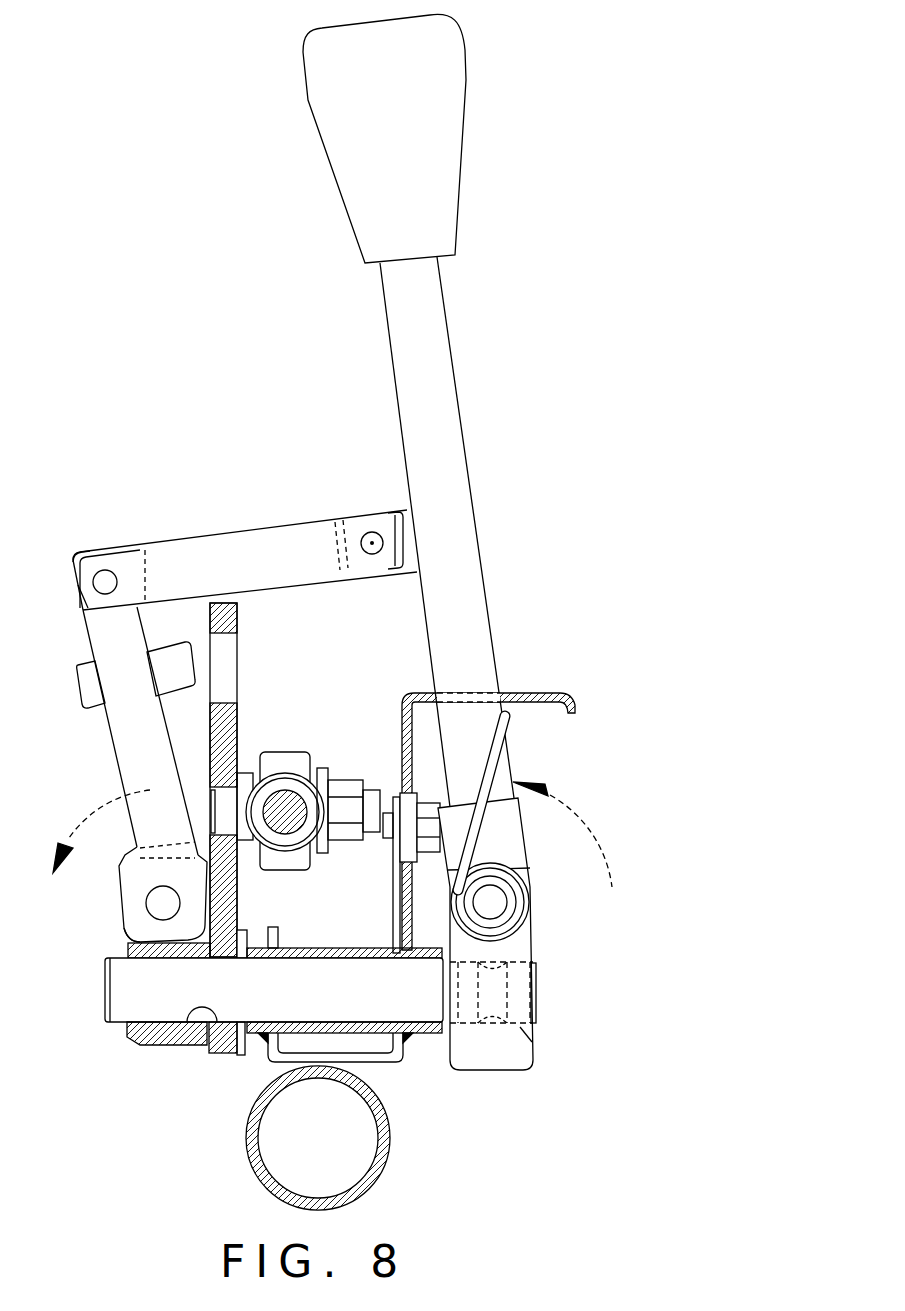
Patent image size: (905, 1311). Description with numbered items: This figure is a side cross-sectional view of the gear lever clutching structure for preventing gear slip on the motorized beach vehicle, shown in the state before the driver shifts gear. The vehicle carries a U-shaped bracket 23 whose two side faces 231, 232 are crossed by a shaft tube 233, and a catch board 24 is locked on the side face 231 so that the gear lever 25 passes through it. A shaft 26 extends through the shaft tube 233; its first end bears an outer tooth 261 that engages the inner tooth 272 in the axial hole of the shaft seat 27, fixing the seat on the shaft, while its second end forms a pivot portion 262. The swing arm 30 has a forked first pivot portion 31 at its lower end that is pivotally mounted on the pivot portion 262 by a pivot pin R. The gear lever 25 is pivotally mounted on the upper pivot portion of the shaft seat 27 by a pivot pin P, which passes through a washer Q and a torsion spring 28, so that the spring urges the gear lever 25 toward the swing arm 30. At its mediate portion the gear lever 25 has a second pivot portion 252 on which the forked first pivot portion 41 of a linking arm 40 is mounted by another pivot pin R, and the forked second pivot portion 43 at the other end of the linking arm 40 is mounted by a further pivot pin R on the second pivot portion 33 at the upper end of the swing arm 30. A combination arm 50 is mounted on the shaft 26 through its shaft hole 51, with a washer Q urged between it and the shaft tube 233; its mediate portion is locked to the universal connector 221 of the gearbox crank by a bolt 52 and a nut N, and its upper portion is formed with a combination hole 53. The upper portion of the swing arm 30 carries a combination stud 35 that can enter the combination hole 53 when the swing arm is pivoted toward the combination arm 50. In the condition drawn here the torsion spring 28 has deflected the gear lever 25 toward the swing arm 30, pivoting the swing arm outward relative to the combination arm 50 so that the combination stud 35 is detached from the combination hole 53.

The U-shaped bracket 23 is at (375, 1065).
The catch board 24 is at (543, 695).
The gear lever 25 is at (440, 373).
The shaft 26 is at (393, 1000).
The shaft seat 27 is at (488, 1060).
The torsion spring 28 is at (503, 730).
The swing arm 30 is at (122, 743).
The first pivot portion of swing arm 31 is at (120, 880).
The second pivot portion of swing arm 33 is at (87, 550).
The combination stud 35 is at (170, 650).
The linking arm 40 is at (242, 550).
The first pivot portion of linking arm 41 is at (381, 566).
The second pivot portion of linking arm 43 is at (88, 603).
The combination arm 50 is at (218, 1052).
The shaft hole 51 is at (192, 1017).
The bolt 52 is at (245, 840).
The combination hole 53 is at (228, 658).
The universal connector 221 is at (285, 763).
The side face 231 is at (393, 867).
The side face 232 is at (278, 927).
The shaft tube 233 is at (333, 953).
The second pivot portion of gear lever 252 is at (403, 510).
The outer tooth 261 is at (531, 1042).
The pivot portion of shaft 262 is at (130, 933).
The inner tooth 272 is at (536, 980).
The pivot pin R is at (105, 573).
The nut N is at (343, 785).
The pivot pin P is at (497, 902).
The washer Q is at (241, 1050).